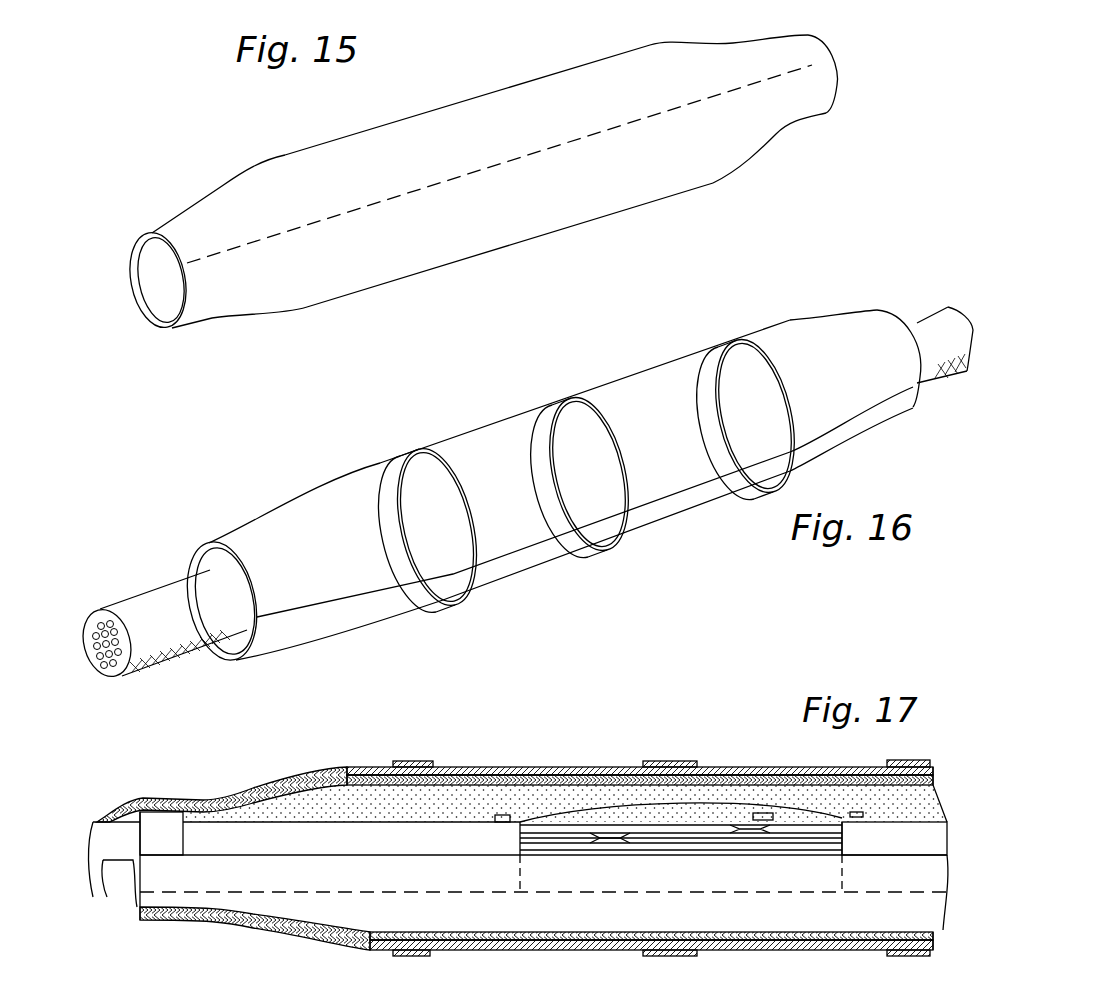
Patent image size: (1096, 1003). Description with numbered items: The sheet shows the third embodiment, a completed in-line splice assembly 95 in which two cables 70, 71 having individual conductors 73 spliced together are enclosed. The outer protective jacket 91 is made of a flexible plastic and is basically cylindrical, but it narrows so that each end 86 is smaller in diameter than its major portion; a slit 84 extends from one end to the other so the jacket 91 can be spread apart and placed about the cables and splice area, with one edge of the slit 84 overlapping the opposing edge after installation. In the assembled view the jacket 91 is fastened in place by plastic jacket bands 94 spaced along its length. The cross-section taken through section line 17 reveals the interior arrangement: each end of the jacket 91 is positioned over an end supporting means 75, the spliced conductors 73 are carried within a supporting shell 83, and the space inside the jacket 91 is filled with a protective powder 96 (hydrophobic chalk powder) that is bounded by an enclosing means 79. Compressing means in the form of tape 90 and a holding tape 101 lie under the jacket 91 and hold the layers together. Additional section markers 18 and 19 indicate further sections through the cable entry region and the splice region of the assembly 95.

In FIG. 16, the cable 70 is at (117, 610).
In FIG. 17, the cable 70 is at (108, 830).
In FIG. 16, the cable 71 is at (920, 323).
In FIG. 17, the individual conductors 73 is at (607, 836).
In FIG. 17, the end supporting means 75 is at (160, 818).
In FIG. 17, the enclosing means 79 is at (934, 785).
In FIG. 17, the supporting shell 83 is at (940, 872).
In FIG. 15, the slit 84 is at (812, 65).
In FIG. 15, the end 86 is at (222, 190).
In FIG. 17, the tape 90 is at (347, 777).
In FIG. 15, the outer protective jacket 91 is at (508, 90).
In FIG. 16, the outer protective jacket 91 is at (477, 425).
In FIG. 17, the outer protective jacket 91 is at (548, 765).
In FIG. 16, the jacket bands 94 is at (407, 453).
In FIG. 17, the jacket bands 94 is at (410, 762).
In FIG. 16, the in-line splice assembly 95 is at (646, 532).
In FIG. 17, the in-line splice assembly 95 is at (638, 738).
In FIG. 17, the protective powder 96 is at (473, 797).
In FIG. 17, the holding tape 101 is at (288, 790).
In FIG. 16, the section line 17— 17 is at (94, 522).
In FIG. 17, the section line 18- 18 is at (187, 750).
In FIG. 17, the section line 19- 19 is at (547, 718).